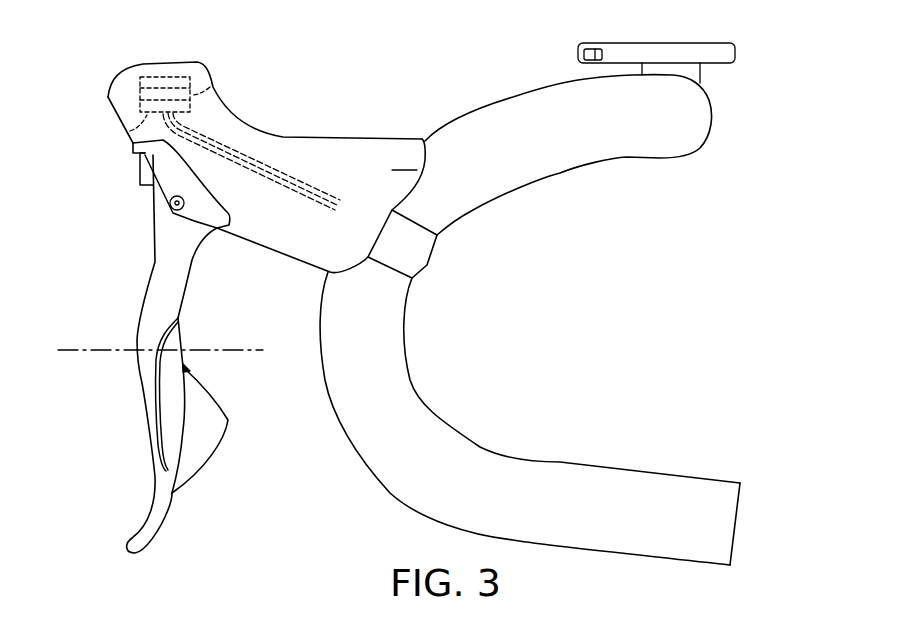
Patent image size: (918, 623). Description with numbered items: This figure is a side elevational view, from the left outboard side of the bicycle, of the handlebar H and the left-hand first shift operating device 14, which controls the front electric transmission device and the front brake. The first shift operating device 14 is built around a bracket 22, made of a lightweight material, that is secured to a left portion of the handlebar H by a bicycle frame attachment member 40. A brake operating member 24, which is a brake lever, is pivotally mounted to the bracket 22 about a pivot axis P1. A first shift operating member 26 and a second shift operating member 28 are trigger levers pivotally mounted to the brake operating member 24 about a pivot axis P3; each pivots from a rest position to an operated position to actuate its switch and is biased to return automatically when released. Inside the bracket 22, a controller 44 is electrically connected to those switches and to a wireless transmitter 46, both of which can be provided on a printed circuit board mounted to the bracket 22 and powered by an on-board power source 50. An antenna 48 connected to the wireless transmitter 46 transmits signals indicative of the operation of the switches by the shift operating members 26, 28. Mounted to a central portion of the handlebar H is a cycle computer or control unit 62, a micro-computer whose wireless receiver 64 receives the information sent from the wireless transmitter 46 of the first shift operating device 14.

The first shift operating device 14 is at (93, 95).
The bracket 22 is at (342, 165).
The brake operating member 24 is at (143, 307).
The first shift operating member 26 is at (170, 343).
The second shift operating member 28 is at (202, 440).
The bicycle frame attachment member 40 is at (425, 265).
The controller 44 is at (210, 87).
The wireless transmitter 46 is at (130, 131).
The antenna 48 is at (275, 163).
The on-board power source 50 is at (147, 77).
The control unit 62 is at (675, 50).
The wireless receiver 64 is at (577, 51).
The handlebar H is at (512, 130).
The pivot axis P1 is at (173, 210).
The pivot axis P3 is at (72, 350).